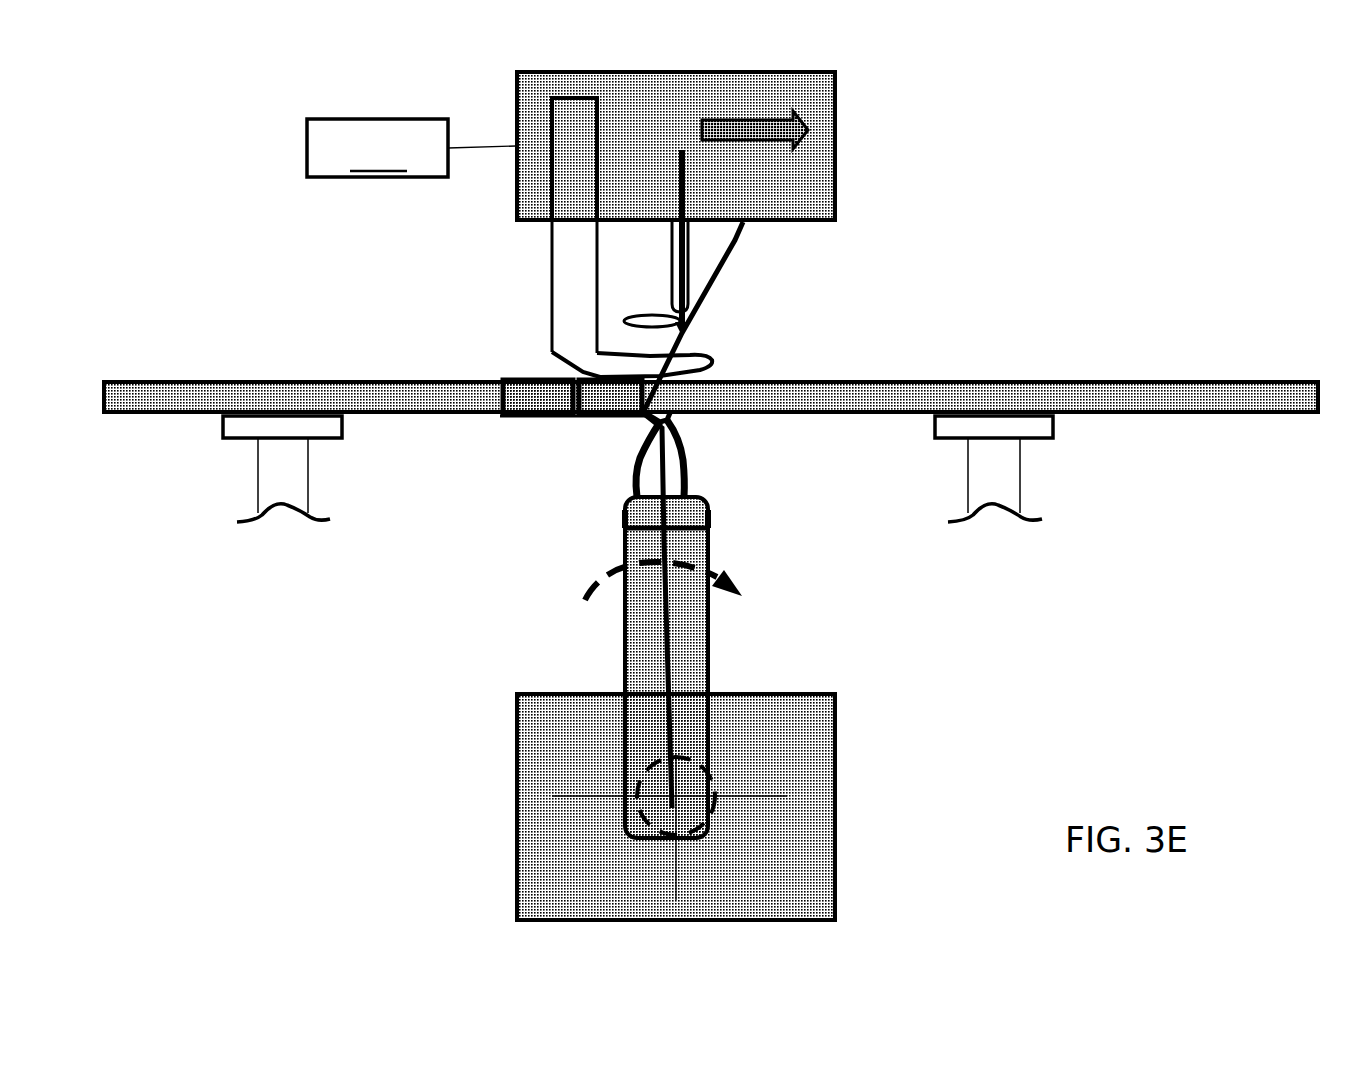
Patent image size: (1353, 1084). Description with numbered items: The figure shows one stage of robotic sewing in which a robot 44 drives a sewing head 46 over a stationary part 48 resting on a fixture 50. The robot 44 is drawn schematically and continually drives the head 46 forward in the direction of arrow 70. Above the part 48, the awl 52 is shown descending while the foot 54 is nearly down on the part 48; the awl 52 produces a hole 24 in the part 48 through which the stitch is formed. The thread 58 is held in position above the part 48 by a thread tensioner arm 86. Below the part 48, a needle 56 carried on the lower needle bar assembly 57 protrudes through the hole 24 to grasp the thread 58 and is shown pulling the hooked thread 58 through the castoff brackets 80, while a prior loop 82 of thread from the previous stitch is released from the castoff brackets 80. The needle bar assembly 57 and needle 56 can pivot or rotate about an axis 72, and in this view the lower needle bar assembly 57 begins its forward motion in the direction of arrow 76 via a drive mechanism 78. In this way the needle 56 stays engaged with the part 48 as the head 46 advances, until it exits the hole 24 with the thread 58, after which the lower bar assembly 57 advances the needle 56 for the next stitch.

The hole 24 is at (497, 397).
The robot 44 is at (411, 148).
The sewing head 46 is at (517, 190).
The stationary part 48 is at (825, 397).
The fixture 50 is at (282, 457).
The awl 52 is at (683, 207).
The foot 54 is at (597, 373).
The needle 56 is at (703, 527).
The lower needle bar assembly 57 is at (625, 632).
The thread 58 is at (726, 258).
The arrow 70 is at (808, 130).
The axis 72 is at (697, 795).
The arrow 76 is at (625, 578).
The drive mechanism 78 is at (517, 770).
The castoff brackets 80 is at (630, 486).
The prior loop 82 is at (638, 435).
The thread tensioner arm 86 is at (685, 320).